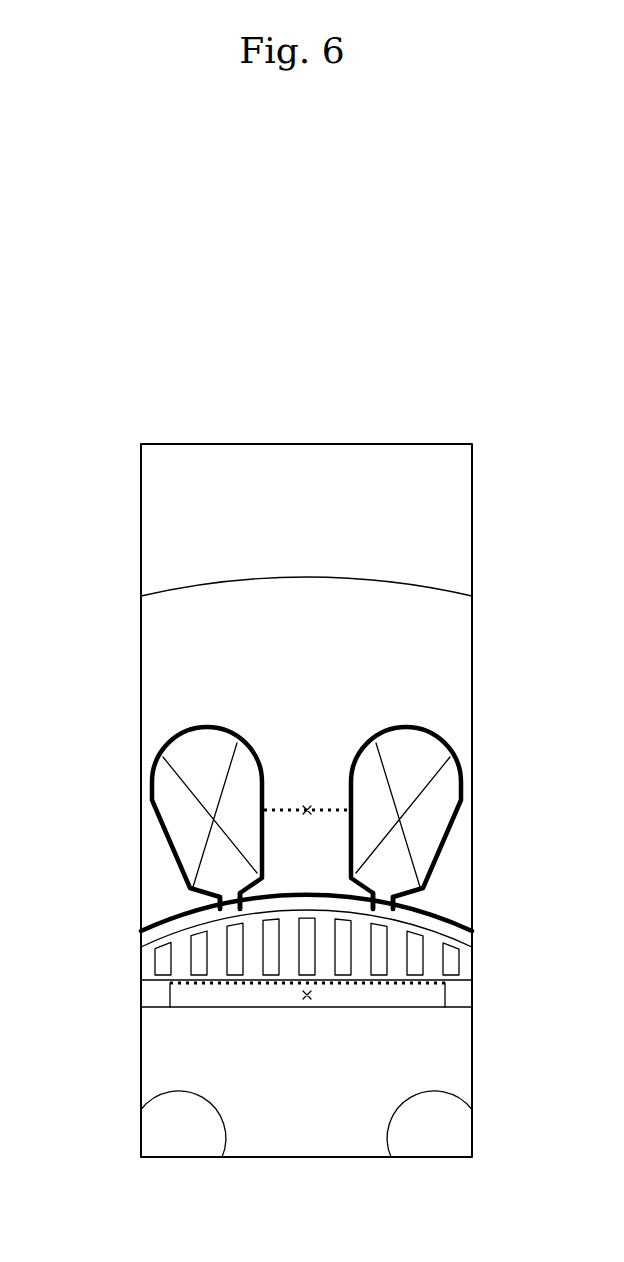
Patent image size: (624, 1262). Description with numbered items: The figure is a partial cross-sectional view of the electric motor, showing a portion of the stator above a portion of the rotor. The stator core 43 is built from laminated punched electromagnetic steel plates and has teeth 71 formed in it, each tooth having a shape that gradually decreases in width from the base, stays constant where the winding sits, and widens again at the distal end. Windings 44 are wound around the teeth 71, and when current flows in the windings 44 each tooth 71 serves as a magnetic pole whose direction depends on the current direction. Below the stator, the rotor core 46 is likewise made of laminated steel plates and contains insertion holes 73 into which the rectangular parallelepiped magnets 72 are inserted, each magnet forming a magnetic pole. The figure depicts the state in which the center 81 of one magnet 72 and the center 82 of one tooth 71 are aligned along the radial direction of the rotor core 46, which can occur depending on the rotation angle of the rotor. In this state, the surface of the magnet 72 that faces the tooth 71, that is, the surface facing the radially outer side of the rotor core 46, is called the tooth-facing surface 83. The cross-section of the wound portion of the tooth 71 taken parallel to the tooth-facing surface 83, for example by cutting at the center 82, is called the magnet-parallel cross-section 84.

The stator core 43 is at (428, 600).
The windings 44 is at (203, 745).
The rotor core 46 is at (150, 1058).
The teeth 71 is at (283, 755).
The magnets 72 is at (385, 995).
The insertion holes 73 is at (462, 995).
The center of the magnet 81 is at (300, 1005).
The center of the tooth 82 is at (312, 805).
The tooth-facing surface 83 is at (428, 982).
The magnet-parallel cross-section 84 is at (330, 805).